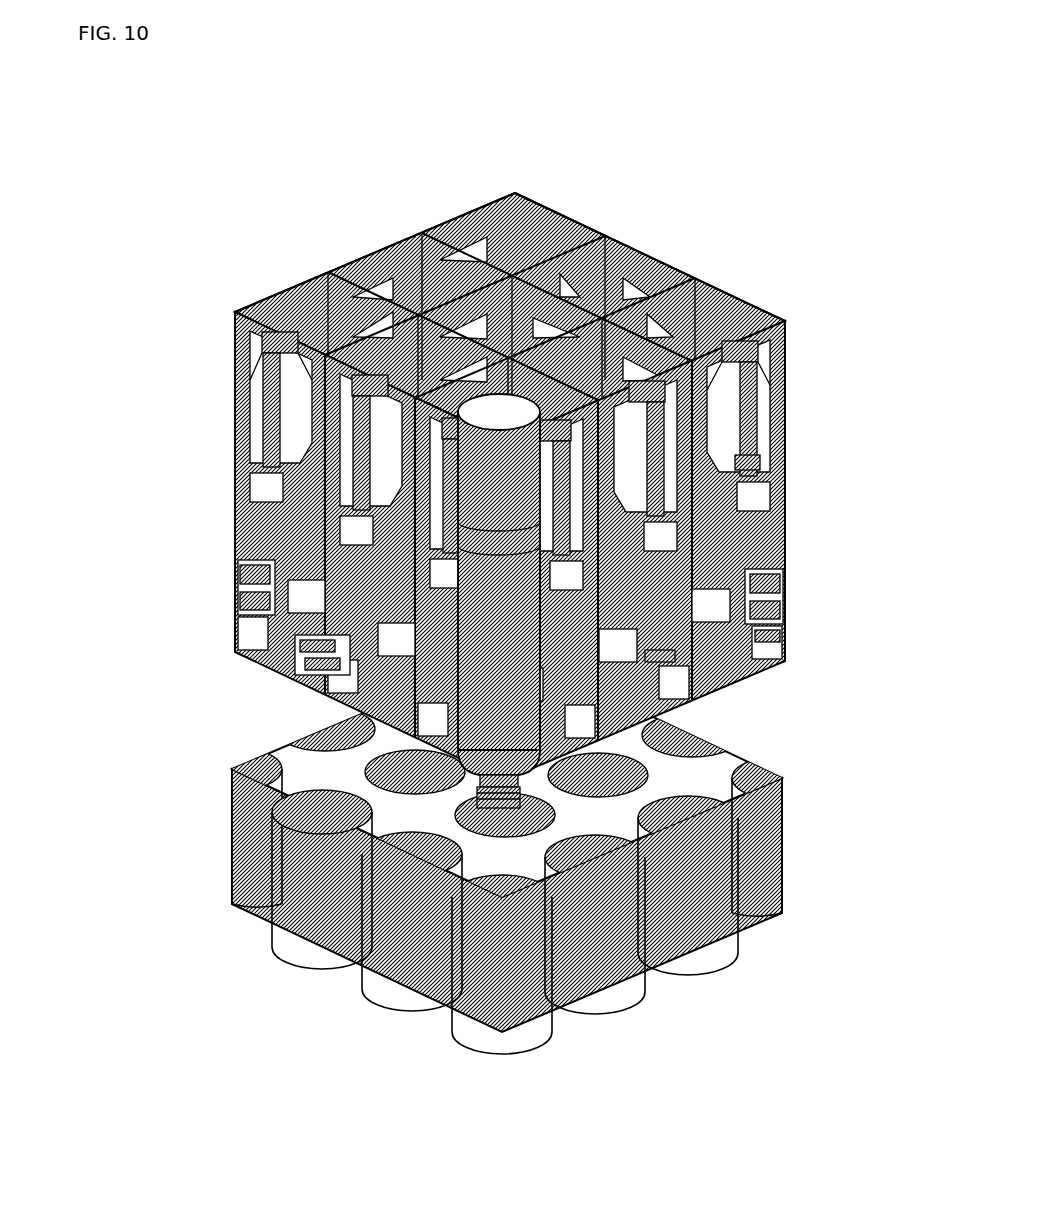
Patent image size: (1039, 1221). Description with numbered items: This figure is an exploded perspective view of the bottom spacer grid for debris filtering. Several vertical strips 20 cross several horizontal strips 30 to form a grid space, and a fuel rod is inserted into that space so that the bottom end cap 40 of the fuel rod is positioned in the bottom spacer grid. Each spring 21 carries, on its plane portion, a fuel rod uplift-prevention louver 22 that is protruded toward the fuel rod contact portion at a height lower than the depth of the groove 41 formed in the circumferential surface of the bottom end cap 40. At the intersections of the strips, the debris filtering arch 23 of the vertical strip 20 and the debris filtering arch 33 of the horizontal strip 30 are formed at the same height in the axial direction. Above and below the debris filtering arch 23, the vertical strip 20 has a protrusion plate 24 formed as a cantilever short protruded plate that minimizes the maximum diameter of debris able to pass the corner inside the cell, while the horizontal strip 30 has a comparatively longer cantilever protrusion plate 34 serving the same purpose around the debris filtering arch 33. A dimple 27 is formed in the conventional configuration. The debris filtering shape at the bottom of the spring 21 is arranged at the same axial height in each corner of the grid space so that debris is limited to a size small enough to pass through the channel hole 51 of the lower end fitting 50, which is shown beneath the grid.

The vertical strip 20 is at (547, 203).
The spring 21 is at (778, 325).
The louver 22 is at (733, 427).
The debris filtering arch 23 is at (777, 597).
The protrusion plate 24 is at (650, 657).
The dimple 27 is at (737, 320).
The horizontal strip 30 is at (487, 197).
The debris filtering arch 33 is at (240, 603).
The protrusion plate 34 is at (335, 670).
The bottom end cap 40 is at (520, 407).
The groove 41 is at (320, 457).
The lower end fitting 50 is at (777, 875).
The channel hole 51 is at (330, 800).